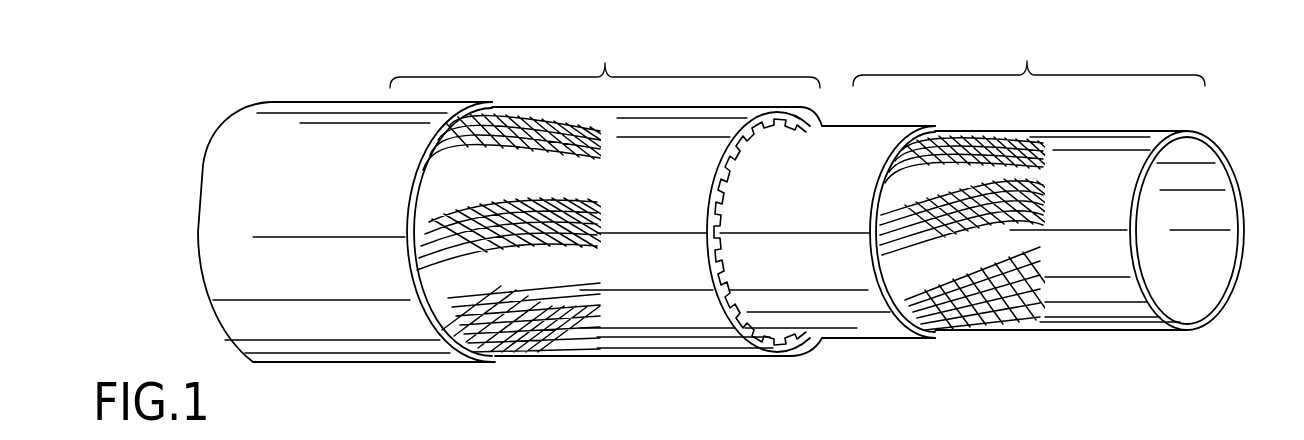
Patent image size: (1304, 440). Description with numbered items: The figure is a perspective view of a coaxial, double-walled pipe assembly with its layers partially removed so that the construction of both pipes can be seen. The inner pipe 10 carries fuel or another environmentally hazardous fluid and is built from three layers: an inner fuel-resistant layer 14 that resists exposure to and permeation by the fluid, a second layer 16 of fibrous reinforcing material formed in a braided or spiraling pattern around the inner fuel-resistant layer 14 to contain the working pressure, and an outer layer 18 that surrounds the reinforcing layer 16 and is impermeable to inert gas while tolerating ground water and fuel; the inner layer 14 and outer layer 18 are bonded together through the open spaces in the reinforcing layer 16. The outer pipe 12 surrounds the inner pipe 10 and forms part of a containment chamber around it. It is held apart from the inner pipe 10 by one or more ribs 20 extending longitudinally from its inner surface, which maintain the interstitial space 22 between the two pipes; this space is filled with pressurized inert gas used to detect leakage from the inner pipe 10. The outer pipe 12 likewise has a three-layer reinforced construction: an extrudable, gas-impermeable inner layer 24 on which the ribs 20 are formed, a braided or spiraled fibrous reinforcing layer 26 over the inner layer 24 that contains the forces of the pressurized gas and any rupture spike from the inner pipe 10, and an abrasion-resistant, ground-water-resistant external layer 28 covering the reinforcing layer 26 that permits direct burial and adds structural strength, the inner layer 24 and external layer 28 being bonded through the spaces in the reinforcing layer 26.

The inner pipe 10 is at (1029, 57).
The outer pipe 12 is at (605, 59).
The inner fuel-resistant layer 14 is at (1200, 290).
The reinforcing layer 16 is at (993, 328).
The outer layer of inner pipe 18 is at (860, 320).
The ribs 20 is at (738, 310).
The interstitial space 22 is at (760, 343).
The inner layer of outer pipe 24 is at (647, 335).
The reinforcing layer of outer pipe 26 is at (540, 338).
The external layer 28 is at (327, 345).